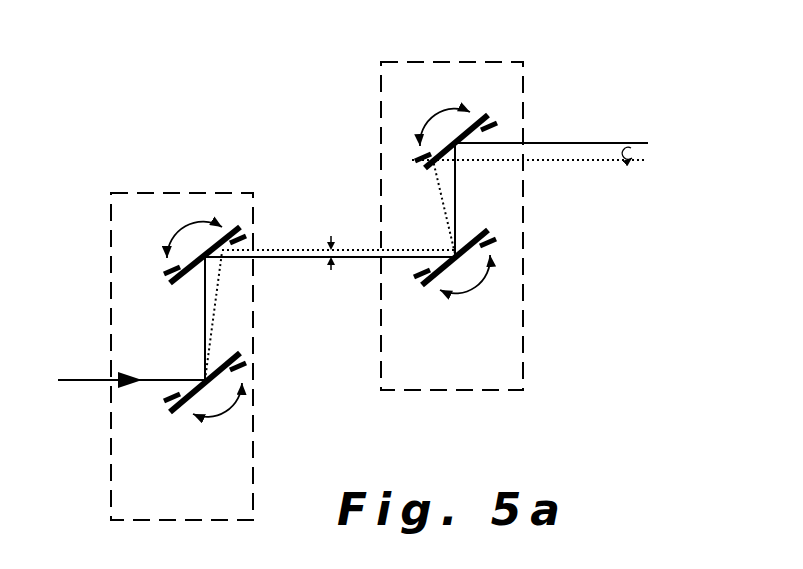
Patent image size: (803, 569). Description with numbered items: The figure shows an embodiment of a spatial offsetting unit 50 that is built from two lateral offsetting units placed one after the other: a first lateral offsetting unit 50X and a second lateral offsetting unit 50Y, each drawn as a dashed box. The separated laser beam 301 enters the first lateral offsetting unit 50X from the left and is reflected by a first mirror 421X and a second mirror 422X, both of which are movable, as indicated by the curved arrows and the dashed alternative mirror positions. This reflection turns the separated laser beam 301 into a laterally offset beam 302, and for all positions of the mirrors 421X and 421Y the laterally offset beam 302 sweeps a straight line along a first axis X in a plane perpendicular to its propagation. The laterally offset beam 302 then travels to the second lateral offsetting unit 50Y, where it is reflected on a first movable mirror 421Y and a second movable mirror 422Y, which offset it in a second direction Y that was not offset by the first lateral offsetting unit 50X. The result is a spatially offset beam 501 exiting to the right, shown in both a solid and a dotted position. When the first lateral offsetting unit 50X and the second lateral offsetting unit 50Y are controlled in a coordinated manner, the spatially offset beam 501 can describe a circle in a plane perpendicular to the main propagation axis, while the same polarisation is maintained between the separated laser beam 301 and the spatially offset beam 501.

The spatial offsetting unit 50 is at (253, 110).
The first lateral offsetting unit 50X is at (147, 192).
The second lateral offsetting unit 50Y is at (422, 62).
The separated laser beam 301 is at (78, 378).
The laterally offset beam 302 is at (288, 255).
The first mirror of the first lateral offsetting unit 421X is at (177, 410).
The second mirror of the first lateral offsetting unit 422X is at (176, 283).
The first movable mirror of the second lateral offsetting unit 421Y is at (421, 270).
The second movable mirror of the second lateral offsetting unit 422Y is at (481, 131).
The spatially offset beam 501 is at (637, 197).